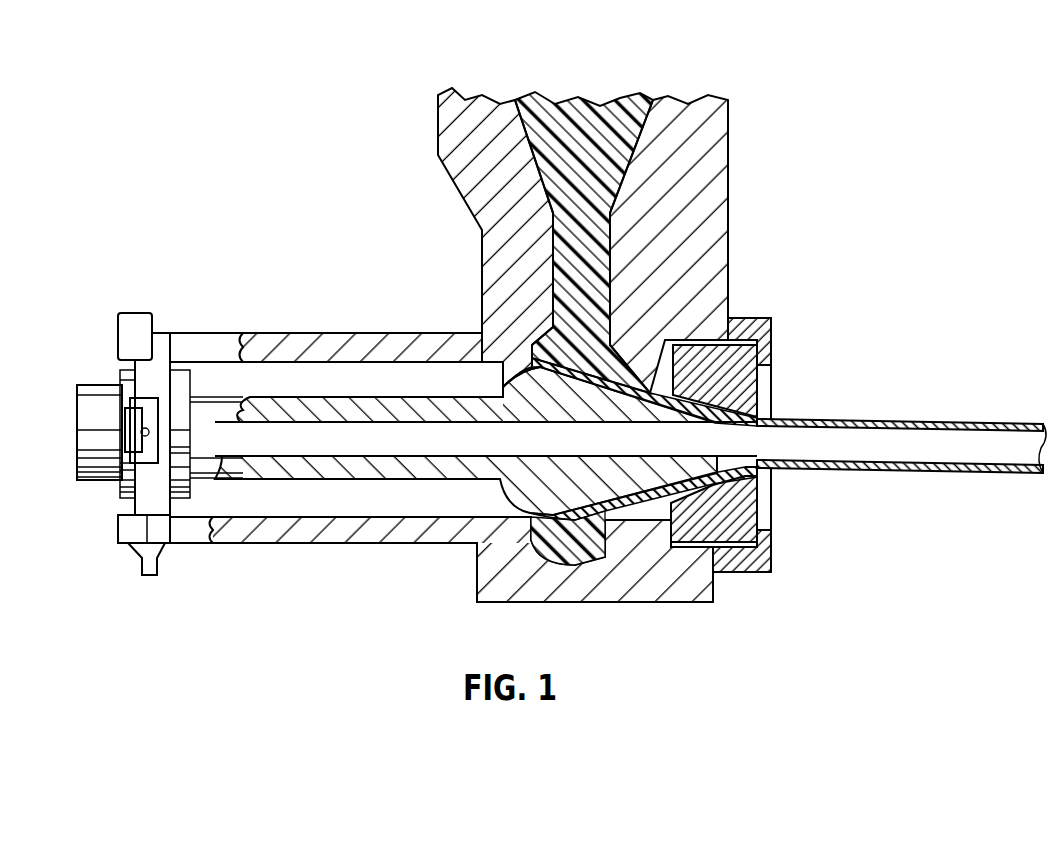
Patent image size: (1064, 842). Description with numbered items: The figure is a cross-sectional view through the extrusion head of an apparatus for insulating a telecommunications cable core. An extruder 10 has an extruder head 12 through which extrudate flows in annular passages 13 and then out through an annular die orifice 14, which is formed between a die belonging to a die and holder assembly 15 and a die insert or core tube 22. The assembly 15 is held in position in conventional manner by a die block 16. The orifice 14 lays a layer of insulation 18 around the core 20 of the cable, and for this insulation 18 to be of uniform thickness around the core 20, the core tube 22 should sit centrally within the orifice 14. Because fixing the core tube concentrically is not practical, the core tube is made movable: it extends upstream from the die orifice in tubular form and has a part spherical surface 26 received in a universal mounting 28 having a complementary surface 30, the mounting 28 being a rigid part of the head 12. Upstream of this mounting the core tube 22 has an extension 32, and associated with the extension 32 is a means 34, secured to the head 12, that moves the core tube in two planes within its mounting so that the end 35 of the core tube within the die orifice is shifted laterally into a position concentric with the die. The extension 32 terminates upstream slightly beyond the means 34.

The extruder 10 is at (747, 135).
The extruder head 12 is at (729, 232).
The annular passages 13 is at (640, 362).
The annular die orifice 14 is at (723, 476).
The die and holder assembly 15 is at (765, 388).
The die block 16 is at (742, 318).
The layer of insulation 18 is at (896, 419).
The core 20 is at (960, 438).
The core tube 22 is at (628, 417).
The part spherical surface 26 is at (520, 483).
The universal mounting 28 is at (478, 557).
The complementary surface 30 is at (512, 352).
The core tube extension 32 is at (288, 400).
The means to effect movement of the core tube 34 is at (165, 334).
The end of the core tube 35 is at (712, 422).